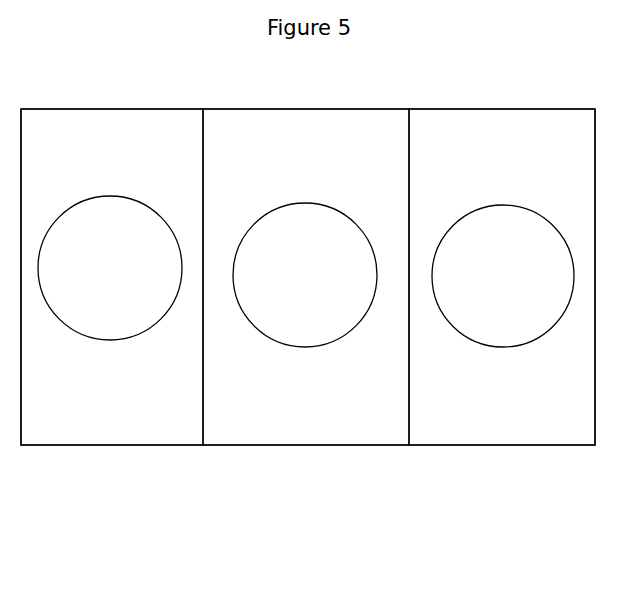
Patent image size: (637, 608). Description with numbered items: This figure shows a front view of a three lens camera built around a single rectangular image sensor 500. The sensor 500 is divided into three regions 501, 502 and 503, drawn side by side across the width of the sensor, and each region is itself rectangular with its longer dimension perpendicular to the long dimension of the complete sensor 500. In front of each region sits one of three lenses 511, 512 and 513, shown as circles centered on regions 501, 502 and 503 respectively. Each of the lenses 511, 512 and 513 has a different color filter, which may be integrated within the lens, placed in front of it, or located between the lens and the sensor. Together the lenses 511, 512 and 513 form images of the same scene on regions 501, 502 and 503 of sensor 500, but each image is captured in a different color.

The rectangular sensor 500 is at (127, 446).
The first sensor region 501 is at (163, 410).
The second sensor region 502 is at (315, 410).
The third sensor region 503 is at (503, 410).
The first lens 511 is at (126, 240).
The second lens 512 is at (318, 237).
The third lens 513 is at (519, 237).